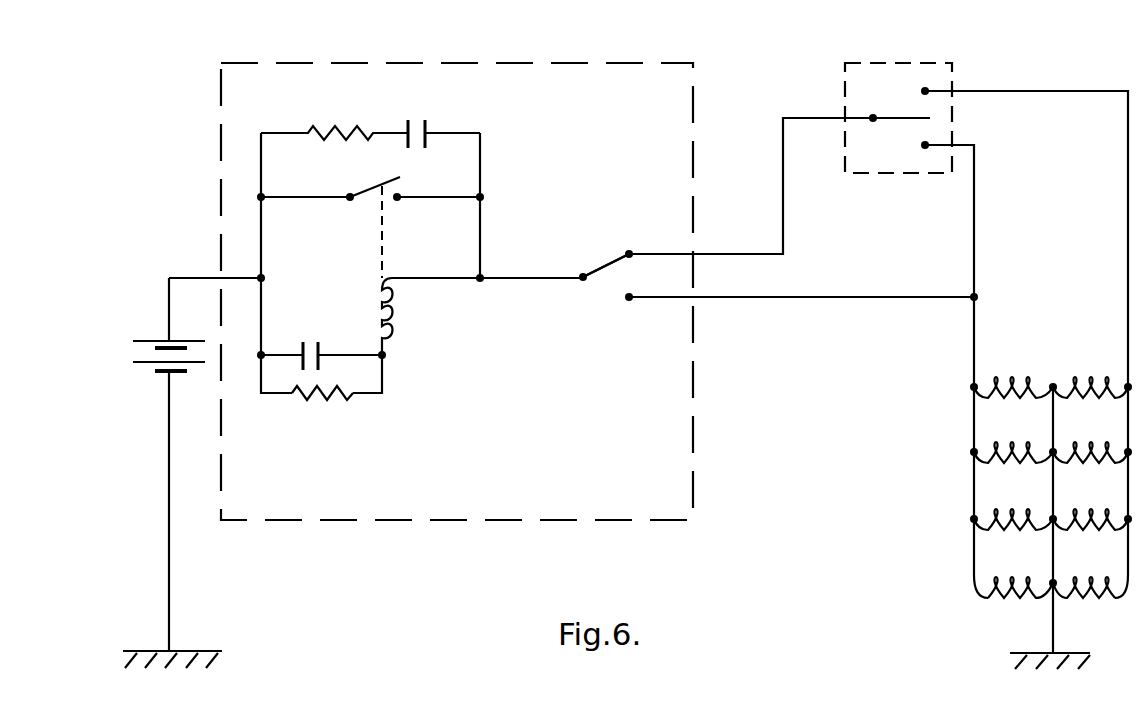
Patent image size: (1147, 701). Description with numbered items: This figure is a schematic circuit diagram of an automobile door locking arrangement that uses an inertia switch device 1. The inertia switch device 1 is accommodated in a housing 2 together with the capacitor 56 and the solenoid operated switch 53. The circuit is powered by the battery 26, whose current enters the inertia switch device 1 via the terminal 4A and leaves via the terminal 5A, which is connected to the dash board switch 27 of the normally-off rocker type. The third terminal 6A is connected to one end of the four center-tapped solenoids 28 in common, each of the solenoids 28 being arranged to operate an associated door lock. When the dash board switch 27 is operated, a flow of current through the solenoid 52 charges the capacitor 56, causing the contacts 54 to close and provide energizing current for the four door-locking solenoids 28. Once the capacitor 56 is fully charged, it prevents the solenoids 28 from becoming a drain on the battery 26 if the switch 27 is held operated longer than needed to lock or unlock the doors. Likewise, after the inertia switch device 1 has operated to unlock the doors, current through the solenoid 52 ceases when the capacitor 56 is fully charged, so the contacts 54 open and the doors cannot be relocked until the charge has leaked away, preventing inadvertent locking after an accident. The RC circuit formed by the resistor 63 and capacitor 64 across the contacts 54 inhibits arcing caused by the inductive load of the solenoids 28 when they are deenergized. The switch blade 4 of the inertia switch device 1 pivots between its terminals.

The inertia switch device 1 is at (614, 308).
The housing 2 is at (610, 62).
The switch blade 4 is at (607, 268).
The terminal 4A is at (581, 282).
The terminal 5A is at (633, 250).
The third terminal 6A is at (632, 301).
The battery 26 is at (148, 340).
The dash board switch 27 is at (901, 62).
The center-tapped solenoids 28 is at (985, 400).
The solenoid 52 is at (388, 335).
The solenoid operated switch 53 is at (414, 239).
The contacts 54 is at (400, 178).
The capacitor 56 is at (322, 337).
The RC circuit resistor 63 is at (345, 125).
The RC circuit capacitor 64 is at (433, 122).